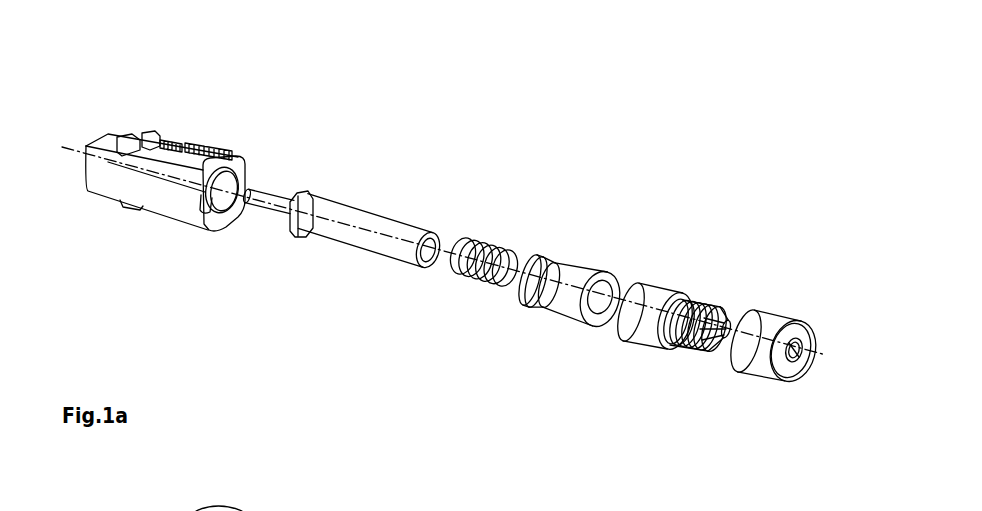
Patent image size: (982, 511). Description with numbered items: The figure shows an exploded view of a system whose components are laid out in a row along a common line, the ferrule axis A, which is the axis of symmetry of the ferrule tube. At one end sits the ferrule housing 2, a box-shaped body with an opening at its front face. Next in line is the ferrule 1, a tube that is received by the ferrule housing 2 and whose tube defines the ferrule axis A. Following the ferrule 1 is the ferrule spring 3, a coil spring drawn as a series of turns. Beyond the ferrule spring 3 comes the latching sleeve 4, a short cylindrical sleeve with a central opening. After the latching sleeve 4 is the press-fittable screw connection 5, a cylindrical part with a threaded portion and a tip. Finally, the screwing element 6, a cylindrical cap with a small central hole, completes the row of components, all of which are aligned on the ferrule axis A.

The ferrule axis A is at (71, 144).
The ferrule 1 is at (380, 175).
The ferrule housing 2 is at (207, 125).
The ferrule spring 3 is at (502, 202).
The latching sleeve 4 is at (603, 223).
The press-fittable screw connection 5 is at (698, 243).
The screwing element 6 is at (800, 270).